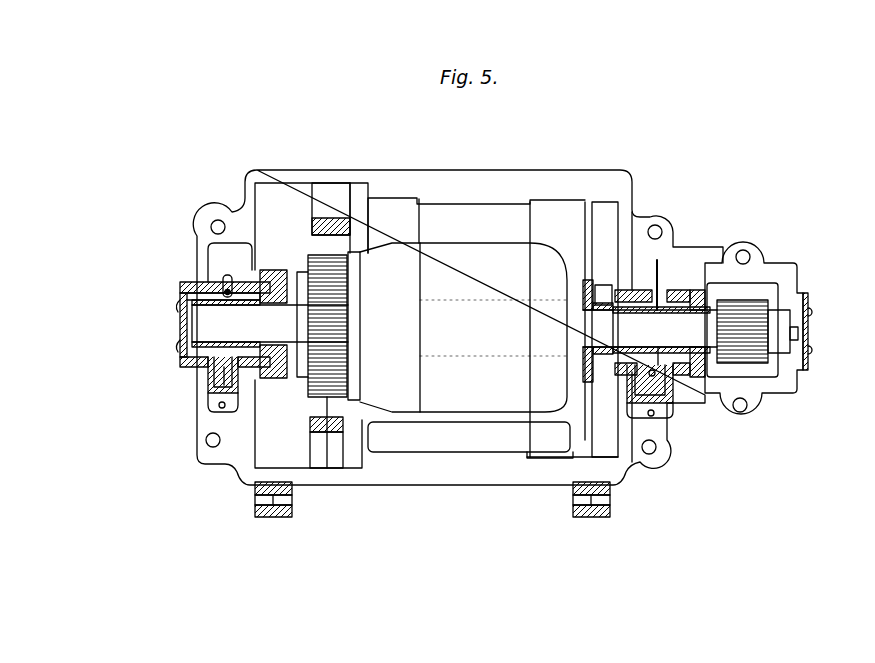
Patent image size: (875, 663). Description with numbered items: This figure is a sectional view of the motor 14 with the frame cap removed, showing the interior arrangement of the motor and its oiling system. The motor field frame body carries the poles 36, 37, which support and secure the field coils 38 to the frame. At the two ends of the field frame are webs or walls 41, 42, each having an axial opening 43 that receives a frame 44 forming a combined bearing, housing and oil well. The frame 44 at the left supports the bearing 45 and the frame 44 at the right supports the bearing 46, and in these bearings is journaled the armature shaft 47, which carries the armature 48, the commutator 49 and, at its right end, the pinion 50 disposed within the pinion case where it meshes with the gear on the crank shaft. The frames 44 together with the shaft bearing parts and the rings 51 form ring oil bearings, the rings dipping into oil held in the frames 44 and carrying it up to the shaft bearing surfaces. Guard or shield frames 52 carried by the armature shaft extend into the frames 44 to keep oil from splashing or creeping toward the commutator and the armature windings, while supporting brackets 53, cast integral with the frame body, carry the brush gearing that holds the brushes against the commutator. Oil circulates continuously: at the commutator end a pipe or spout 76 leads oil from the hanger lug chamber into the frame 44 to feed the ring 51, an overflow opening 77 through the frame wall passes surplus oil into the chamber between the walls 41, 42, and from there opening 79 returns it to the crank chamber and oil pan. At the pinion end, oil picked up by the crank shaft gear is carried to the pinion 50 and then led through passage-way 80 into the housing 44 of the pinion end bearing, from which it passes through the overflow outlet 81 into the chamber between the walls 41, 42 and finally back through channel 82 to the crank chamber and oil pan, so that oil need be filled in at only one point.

The electric motor 14 is at (482, 476).
The pole 36 is at (502, 215).
The pole 37 is at (430, 417).
The field coil 38 is at (393, 440).
The web or wall 41 is at (200, 257).
The web or wall 42 is at (248, 253).
The axial opening 43 is at (200, 372).
The frame 44 is at (207, 373).
The bearing 45 is at (187, 342).
The bearing 46 is at (718, 395).
The armature shaft 47 is at (210, 318).
The armature 48 is at (472, 397).
The commutator 49 is at (327, 435).
The pinion 50 is at (793, 392).
The ring 51 is at (227, 397).
The guard or shield frame 52 is at (283, 377).
The supporting bracket 53 is at (318, 190).
The pipe or spout 76 is at (218, 280).
The overflow opening 77 is at (190, 362).
The opening 79 is at (220, 408).
The passage-way 80 is at (725, 298).
The overflow outlet 81 is at (649, 377).
The channel 82 is at (651, 417).